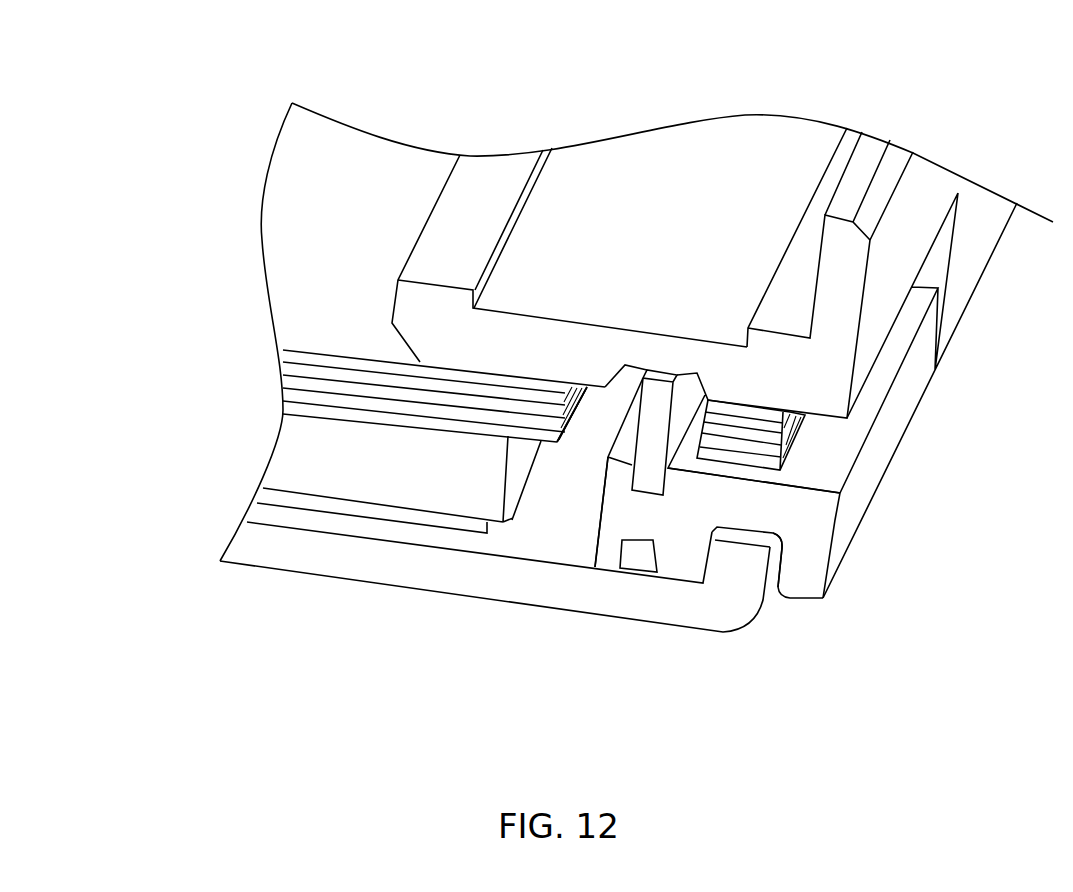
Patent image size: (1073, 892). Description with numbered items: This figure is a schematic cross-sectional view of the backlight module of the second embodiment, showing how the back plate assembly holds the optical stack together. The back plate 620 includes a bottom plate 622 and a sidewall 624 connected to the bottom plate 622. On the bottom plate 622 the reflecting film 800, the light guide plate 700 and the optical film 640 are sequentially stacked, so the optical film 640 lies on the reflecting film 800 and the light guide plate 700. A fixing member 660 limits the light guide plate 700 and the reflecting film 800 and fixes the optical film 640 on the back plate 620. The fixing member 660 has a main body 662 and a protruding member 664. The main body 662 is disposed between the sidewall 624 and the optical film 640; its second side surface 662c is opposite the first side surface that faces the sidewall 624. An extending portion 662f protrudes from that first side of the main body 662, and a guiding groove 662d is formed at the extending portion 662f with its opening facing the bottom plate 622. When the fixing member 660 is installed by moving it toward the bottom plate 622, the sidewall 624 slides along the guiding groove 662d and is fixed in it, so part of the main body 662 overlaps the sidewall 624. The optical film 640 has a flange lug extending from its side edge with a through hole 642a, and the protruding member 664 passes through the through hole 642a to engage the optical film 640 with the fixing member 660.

The back plate 620 is at (735, 710).
The bottom plate 622 is at (733, 558).
The sidewall 624 is at (767, 616).
The optical film 640 is at (772, 438).
The through hole 642a is at (573, 422).
The fixing member 660 is at (735, 53).
The main body 662 is at (647, 525).
The second side surface 662c is at (590, 517).
The guiding groove 662d is at (750, 548).
The extending portion 662f is at (778, 511).
The protruding member 664 is at (652, 450).
The light guide plate 700 is at (300, 445).
The reflecting film 800 is at (270, 492).